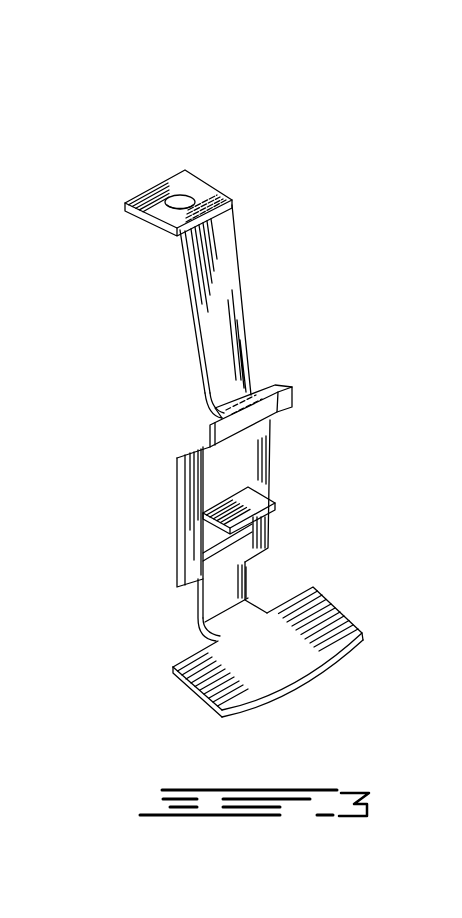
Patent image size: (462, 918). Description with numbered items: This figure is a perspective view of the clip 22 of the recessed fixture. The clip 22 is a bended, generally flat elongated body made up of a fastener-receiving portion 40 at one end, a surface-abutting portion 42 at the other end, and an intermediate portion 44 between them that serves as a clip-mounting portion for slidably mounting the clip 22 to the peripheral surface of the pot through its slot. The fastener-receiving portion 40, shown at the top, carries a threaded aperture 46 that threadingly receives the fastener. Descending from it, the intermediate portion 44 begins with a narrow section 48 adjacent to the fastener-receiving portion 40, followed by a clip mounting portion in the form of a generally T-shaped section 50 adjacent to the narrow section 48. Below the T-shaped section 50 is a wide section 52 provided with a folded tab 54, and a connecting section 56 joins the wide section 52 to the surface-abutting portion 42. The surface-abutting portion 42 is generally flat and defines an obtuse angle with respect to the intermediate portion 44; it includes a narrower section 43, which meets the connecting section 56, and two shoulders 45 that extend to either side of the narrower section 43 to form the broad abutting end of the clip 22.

The clip 22 is at (263, 257).
The fastener-receiving portion 40 is at (204, 190).
The threaded aperture 46 is at (177, 196).
The narrow section 48 is at (228, 347).
The intermediate portion 44 is at (207, 373).
The T-shaped section 50 is at (292, 398).
The wide section 52 is at (271, 451).
The folded tab 54 is at (277, 491).
The connecting section 56 is at (250, 565).
The narrower section 43 is at (227, 622).
The surface-abutting portion 42 is at (283, 694).
The shoulders 45 is at (193, 653).